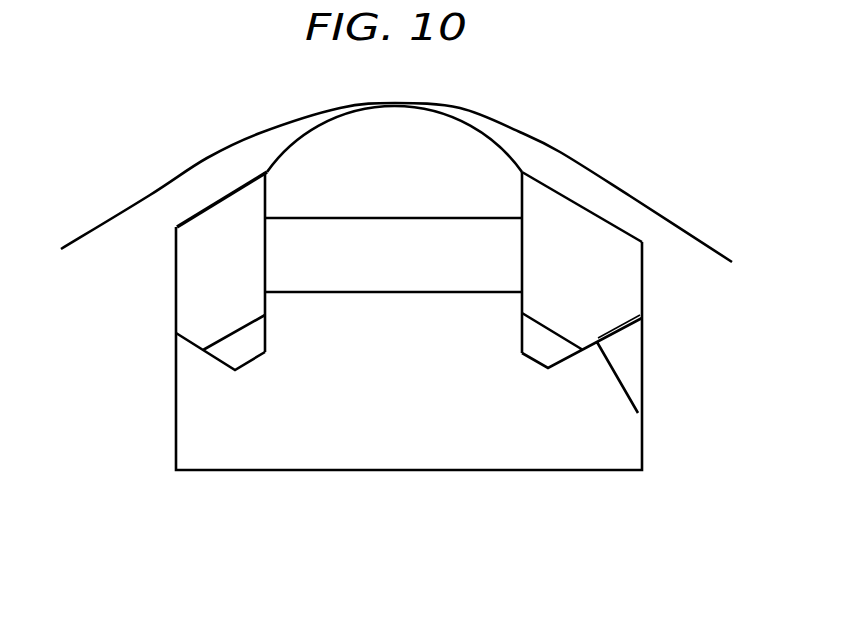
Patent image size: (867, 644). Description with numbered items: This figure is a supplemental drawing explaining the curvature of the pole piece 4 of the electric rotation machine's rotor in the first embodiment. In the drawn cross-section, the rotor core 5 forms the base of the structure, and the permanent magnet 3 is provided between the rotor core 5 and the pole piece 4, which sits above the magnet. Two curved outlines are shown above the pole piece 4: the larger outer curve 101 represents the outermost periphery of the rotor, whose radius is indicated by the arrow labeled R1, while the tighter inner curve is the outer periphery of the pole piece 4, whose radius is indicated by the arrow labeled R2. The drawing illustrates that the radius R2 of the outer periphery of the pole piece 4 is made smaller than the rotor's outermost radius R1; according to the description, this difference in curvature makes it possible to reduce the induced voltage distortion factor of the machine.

The cover glass / protective layer 101 is at (207, 160).
The pole piece 4 is at (480, 172).
The permanent magnet 3 is at (488, 255).
The rotor core 5 is at (550, 437).
The radius of outermost peripheral part of rotor R1 is at (280, 128).
The radius of outer periphery of pole piece R2 is at (460, 125).